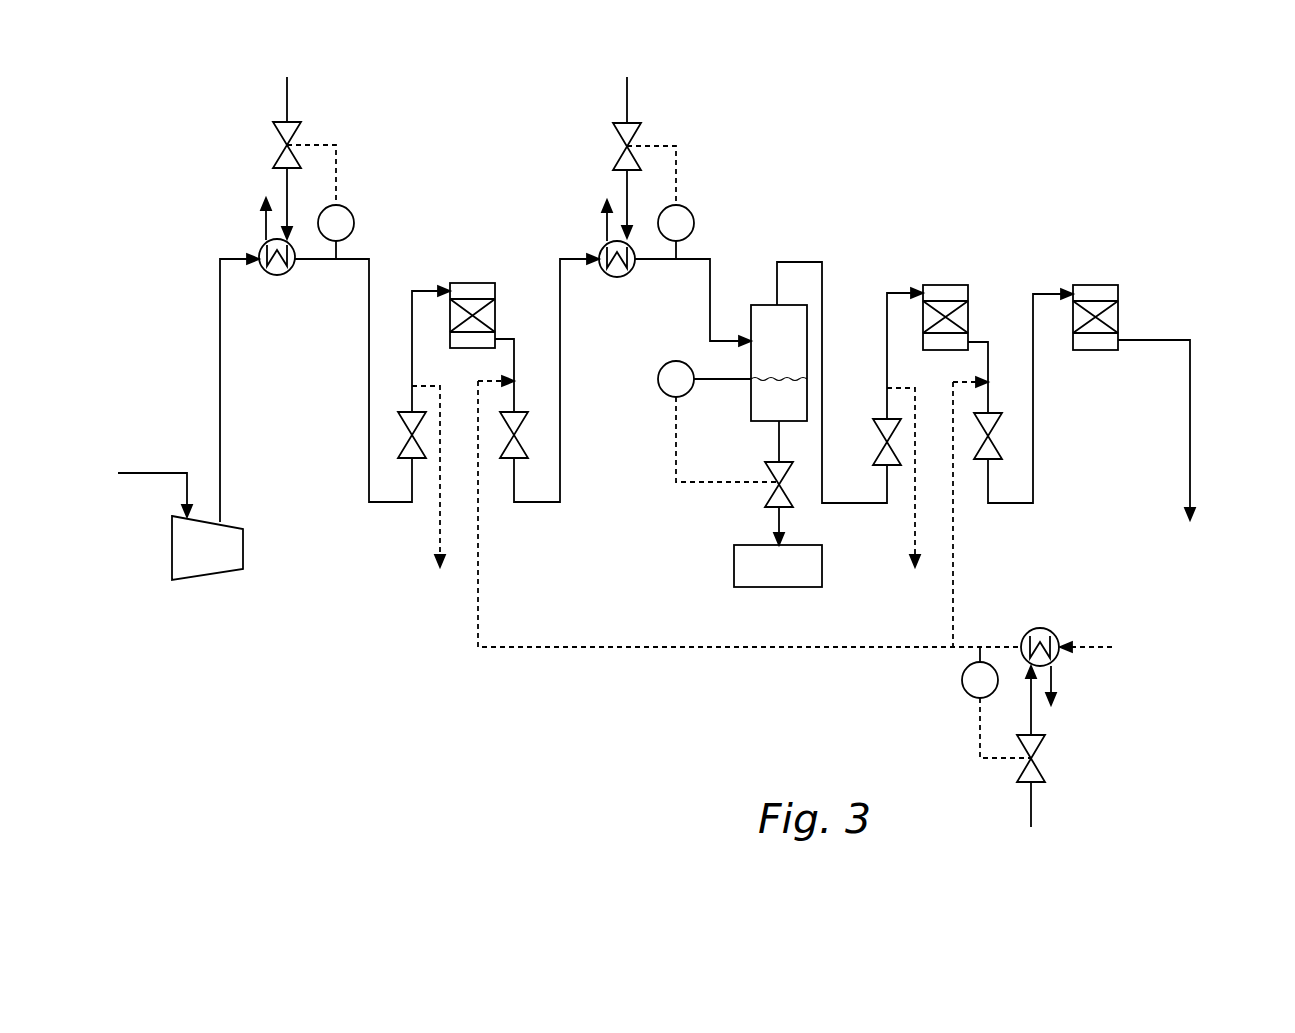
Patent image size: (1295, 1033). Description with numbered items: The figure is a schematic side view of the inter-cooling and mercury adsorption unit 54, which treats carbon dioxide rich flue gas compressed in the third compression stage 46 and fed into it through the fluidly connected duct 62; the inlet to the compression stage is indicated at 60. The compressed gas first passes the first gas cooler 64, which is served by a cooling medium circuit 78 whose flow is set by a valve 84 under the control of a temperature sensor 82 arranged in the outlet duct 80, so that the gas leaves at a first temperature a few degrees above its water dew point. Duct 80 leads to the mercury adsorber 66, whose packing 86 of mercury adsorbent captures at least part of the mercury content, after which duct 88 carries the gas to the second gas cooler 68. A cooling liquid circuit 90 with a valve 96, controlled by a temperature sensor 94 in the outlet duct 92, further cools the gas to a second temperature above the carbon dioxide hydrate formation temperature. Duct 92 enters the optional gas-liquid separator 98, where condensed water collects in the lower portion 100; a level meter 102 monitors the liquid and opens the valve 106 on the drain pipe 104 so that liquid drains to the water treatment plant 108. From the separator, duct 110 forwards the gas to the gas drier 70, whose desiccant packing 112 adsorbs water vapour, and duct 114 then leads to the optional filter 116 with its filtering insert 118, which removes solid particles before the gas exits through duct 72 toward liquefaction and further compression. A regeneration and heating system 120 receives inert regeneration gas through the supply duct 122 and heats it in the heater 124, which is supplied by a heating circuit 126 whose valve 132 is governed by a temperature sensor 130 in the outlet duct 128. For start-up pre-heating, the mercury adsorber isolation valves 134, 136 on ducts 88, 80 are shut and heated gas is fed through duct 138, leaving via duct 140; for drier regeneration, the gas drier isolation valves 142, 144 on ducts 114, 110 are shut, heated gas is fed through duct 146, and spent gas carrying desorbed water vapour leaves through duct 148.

The third compression stage 46 is at (208, 581).
The inter-cooling and mercury adsorption unit 54 is at (840, 157).
The feed gas inlet 60 is at (140, 473).
The duct 62 is at (218, 362).
The first gas cooler 64 is at (277, 276).
The mercury adsorber 66 is at (472, 283).
The second gas cooler 68 is at (614, 278).
The gas drier 70 is at (945, 285).
The duct 72 is at (1190, 418).
The cooling medium circuit 78 is at (266, 232).
The duct 80 is at (368, 392).
The temperature sensor 82 is at (355, 222).
The valve 84 is at (300, 132).
The packing 86 is at (490, 318).
The duct 88 is at (560, 472).
The cooling liquid circuit 90 is at (606, 228).
The duct 92 is at (710, 275).
The temperature sensor 94 is at (694, 218).
The valve 96 is at (642, 135).
The gas-liquid separator 98 is at (807, 338).
The lower portion 100 is at (807, 400).
The level meter 102 is at (658, 380).
The drain pipe 104 is at (779, 432).
The valve 106 is at (765, 498).
The water treatment plant 108 is at (734, 565).
The duct 110 is at (822, 275).
The packing 112 is at (964, 318).
The duct 114 is at (1033, 405).
The filter 116 is at (1118, 292).
The filtering insert 118 is at (1112, 318).
The regeneration and heating system 120 is at (1086, 682).
The supply duct 122 is at (1095, 645).
The heater 124 is at (1040, 628).
The heating circuit 126 is at (1030, 805).
The duct 128 is at (968, 647).
The temperature sensor 130 is at (962, 684).
The valve 132 is at (1040, 762).
The mercury adsorber isolation valve 134 is at (500, 448).
The mercury adsorber isolation valve 136 is at (403, 446).
The duct 138 is at (478, 598).
The duct 140 is at (440, 528).
The gas drier isolation valve 142 is at (1000, 446).
The gas drier isolation valve 144 is at (873, 455).
The duct 146 is at (953, 528).
The duct 148 is at (915, 520).